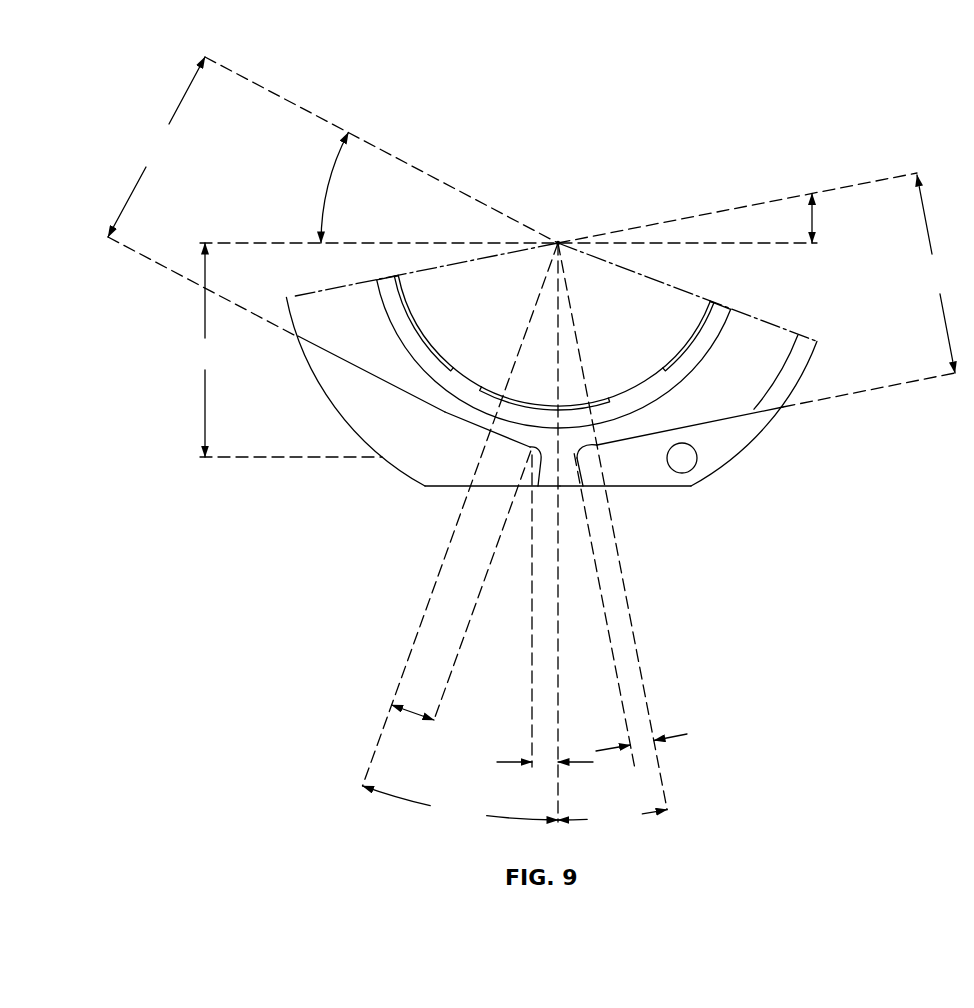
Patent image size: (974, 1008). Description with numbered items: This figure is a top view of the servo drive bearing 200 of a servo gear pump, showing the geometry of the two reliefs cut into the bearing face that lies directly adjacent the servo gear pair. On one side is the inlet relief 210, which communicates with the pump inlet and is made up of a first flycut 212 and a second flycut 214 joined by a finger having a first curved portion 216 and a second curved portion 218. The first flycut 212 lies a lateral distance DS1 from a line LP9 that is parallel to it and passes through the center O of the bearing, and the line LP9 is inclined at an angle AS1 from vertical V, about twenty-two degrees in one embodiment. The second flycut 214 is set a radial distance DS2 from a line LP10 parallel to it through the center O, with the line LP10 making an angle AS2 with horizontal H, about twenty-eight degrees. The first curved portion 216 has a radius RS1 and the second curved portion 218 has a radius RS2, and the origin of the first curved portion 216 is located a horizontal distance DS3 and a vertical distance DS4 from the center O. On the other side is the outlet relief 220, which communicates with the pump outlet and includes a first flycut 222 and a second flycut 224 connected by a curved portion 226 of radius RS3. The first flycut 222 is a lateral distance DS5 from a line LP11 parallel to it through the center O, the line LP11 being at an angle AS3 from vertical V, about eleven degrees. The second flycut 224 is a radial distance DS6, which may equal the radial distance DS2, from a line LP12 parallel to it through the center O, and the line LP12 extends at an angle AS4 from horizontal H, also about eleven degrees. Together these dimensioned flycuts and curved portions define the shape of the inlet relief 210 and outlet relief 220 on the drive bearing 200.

The servo drive bearing 200 is at (858, 90).
The inlet relief 210 is at (407, 465).
The first flycut 212 is at (528, 474).
The second flycut 214 is at (373, 375).
The first curved portion 216 is at (531, 456).
The second curved portion 218 is at (470, 428).
The outlet relief 220 is at (713, 457).
The first flycut 222 is at (584, 460).
The second flycut 224 is at (723, 420).
The curved portion 226 is at (590, 458).
The center O is at (559, 228).
The horizontal H is at (390, 243).
The vertical V is at (563, 338).
The line parallel to the first flycut LP9 is at (397, 683).
The line parallel to the second flycut LP10 is at (435, 177).
The line parallel to the first flycut LP11 is at (645, 690).
The line parallel to the second flycut LP12 is at (740, 207).
The lateral distance DS1 is at (413, 713).
The radial distance DS2 is at (202, 196).
The horizontal distance DS3 is at (517, 762).
The vertical distance DS4 is at (283, 350).
The lateral distance DS5 is at (670, 734).
The radial distance DS6 is at (872, 291).
The angle AS1 is at (461, 805).
The angle AS2 is at (329, 188).
The angle AS3 is at (612, 817).
The angle AS4 is at (815, 220).
The radius RS1 is at (538, 478).
The radius RS2 is at (462, 412).
The radius RS3 is at (598, 487).